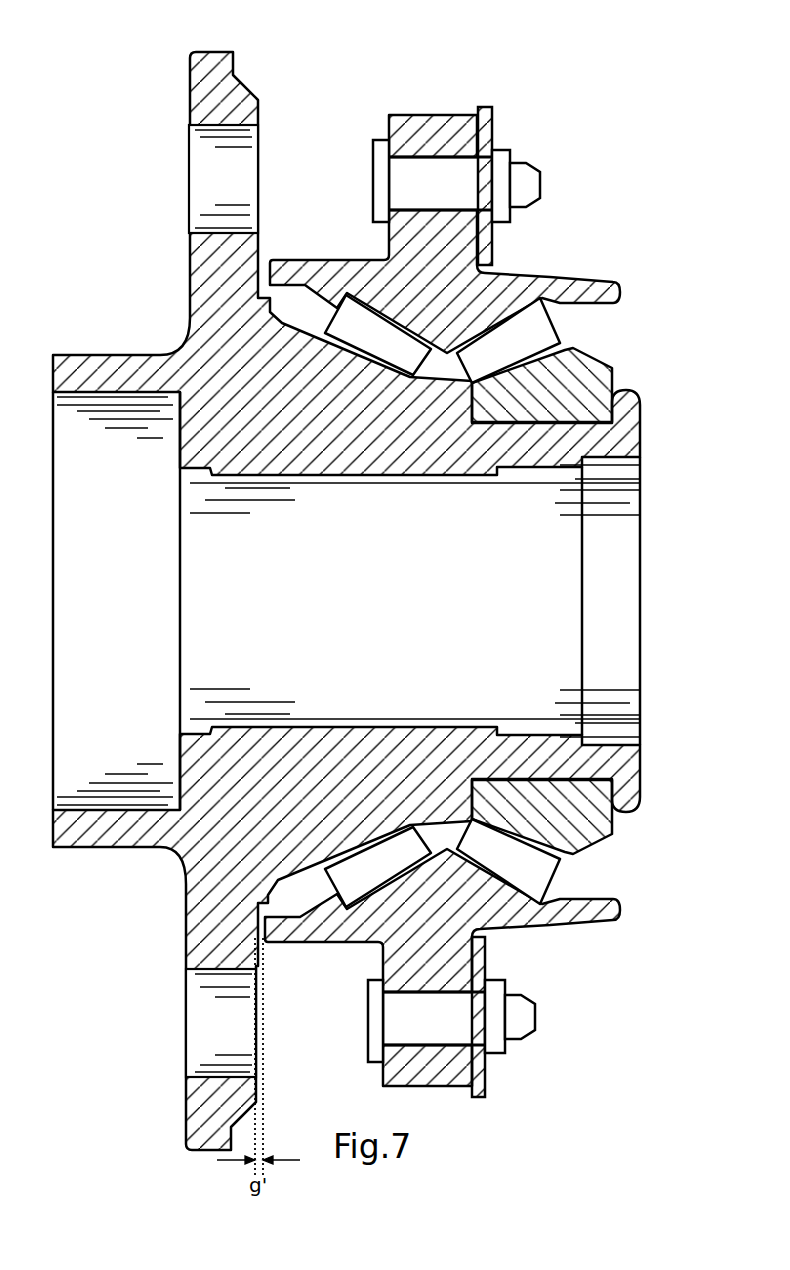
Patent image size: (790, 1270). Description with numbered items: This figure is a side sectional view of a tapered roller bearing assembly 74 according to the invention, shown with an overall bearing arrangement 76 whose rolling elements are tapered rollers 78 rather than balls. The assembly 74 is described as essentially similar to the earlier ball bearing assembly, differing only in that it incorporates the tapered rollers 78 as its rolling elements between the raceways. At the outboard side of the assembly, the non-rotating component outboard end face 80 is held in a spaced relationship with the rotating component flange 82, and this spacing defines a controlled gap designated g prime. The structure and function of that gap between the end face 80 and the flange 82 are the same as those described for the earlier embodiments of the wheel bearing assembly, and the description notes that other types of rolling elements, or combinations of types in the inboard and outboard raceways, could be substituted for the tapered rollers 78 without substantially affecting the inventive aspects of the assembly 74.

The tapered roller bearing assembly 74 is at (384, 576).
The tapered roller bearing 76 is at (490, 602).
The tapered rollers 78 is at (367, 323).
The non-rotating component outboard end face 80 is at (268, 927).
The rotating component flange 82 is at (207, 910).